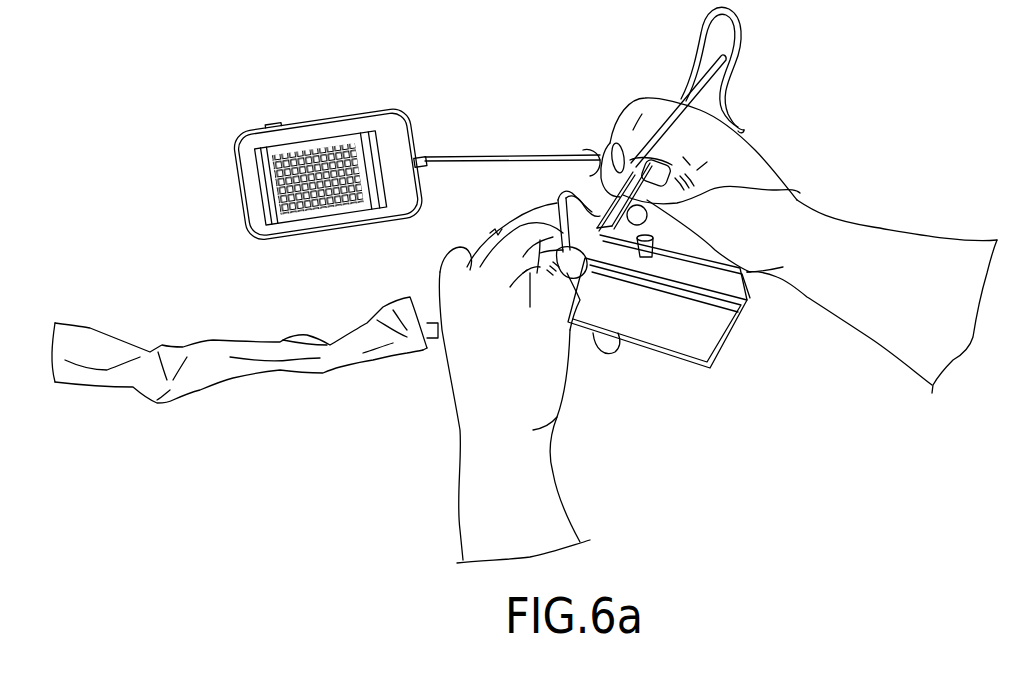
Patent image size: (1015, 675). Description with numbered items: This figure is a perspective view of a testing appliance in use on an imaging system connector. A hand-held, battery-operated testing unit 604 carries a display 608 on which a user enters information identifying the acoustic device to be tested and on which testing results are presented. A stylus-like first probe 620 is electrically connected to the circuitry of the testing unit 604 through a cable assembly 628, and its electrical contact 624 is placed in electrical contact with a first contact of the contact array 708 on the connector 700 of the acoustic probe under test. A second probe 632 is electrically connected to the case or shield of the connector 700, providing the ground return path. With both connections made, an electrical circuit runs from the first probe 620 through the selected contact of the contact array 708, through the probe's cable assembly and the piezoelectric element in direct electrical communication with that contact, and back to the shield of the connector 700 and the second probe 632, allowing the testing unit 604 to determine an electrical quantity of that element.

The testing unit 604 is at (411, 101).
The display 608 is at (368, 147).
The first probe 620 is at (677, 88).
The electrical contact 624 is at (583, 155).
The cable assembly 628 is at (482, 156).
The second probe 632 is at (549, 201).
The connector 700 is at (674, 358).
The contact array 708 is at (612, 250).